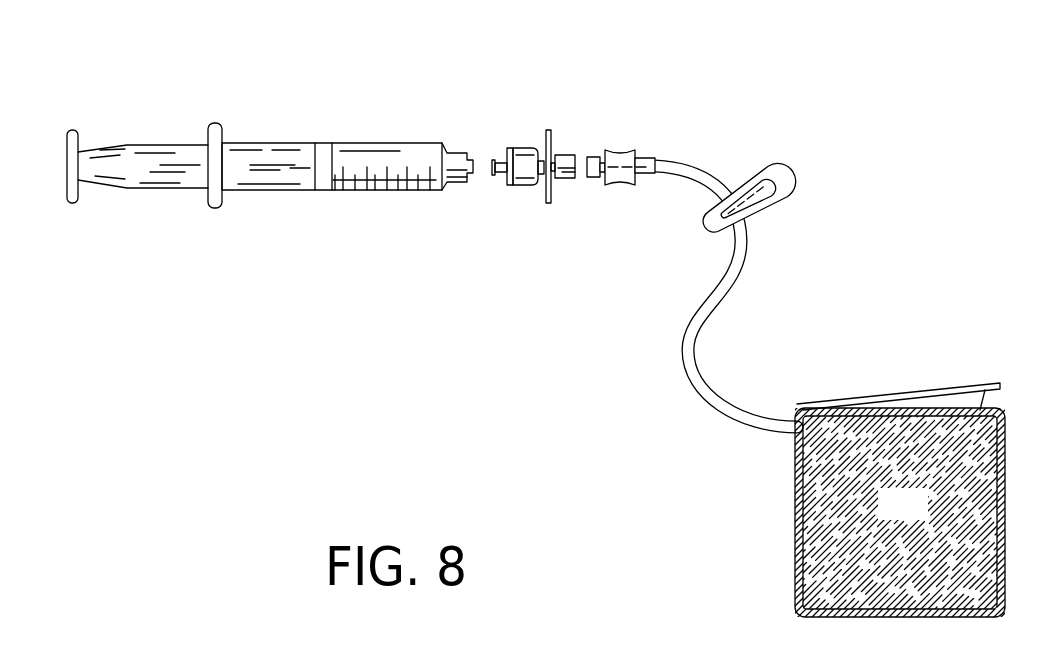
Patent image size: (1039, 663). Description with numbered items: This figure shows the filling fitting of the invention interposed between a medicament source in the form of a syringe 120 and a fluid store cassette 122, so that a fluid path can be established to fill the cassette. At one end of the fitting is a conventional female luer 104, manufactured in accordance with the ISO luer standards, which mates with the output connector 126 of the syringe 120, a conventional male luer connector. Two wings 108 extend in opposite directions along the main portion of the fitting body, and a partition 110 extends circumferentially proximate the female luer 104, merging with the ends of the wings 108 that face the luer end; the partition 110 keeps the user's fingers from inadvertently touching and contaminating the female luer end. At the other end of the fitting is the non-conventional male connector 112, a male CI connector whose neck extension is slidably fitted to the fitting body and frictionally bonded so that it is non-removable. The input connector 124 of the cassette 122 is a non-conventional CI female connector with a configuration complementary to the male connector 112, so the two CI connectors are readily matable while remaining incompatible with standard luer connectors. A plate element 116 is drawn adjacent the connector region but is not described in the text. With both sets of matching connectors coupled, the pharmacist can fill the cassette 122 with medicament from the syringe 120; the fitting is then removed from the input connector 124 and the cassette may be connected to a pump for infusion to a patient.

The female luer 104 is at (497, 178).
The wings 108 is at (528, 185).
The partition 110 is at (508, 148).
The non-conventional male connector 112 is at (565, 178).
The plate 116 is at (552, 136).
The syringe 120 is at (270, 169).
The fluid store cassette 122 is at (918, 517).
The input connector 124 is at (587, 157).
The output connector 126 is at (458, 150).